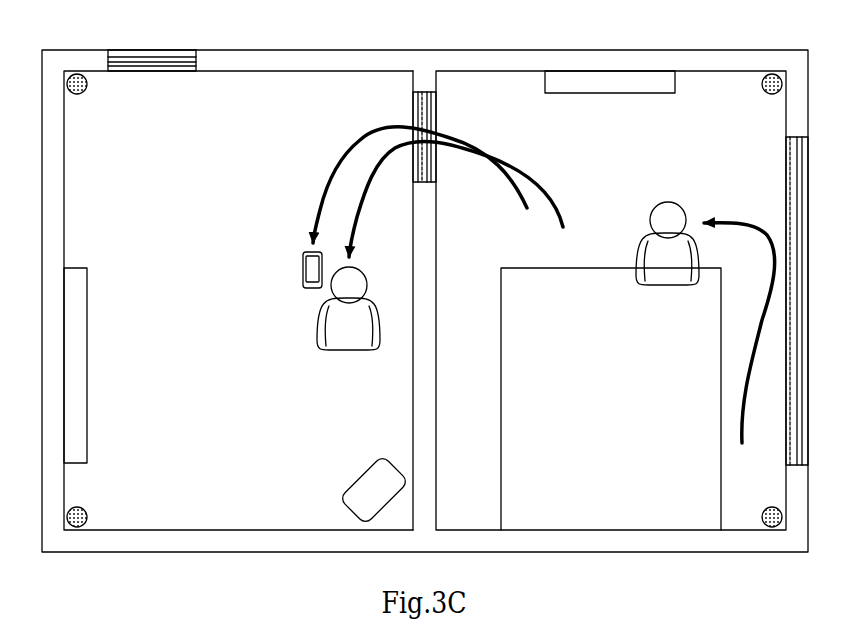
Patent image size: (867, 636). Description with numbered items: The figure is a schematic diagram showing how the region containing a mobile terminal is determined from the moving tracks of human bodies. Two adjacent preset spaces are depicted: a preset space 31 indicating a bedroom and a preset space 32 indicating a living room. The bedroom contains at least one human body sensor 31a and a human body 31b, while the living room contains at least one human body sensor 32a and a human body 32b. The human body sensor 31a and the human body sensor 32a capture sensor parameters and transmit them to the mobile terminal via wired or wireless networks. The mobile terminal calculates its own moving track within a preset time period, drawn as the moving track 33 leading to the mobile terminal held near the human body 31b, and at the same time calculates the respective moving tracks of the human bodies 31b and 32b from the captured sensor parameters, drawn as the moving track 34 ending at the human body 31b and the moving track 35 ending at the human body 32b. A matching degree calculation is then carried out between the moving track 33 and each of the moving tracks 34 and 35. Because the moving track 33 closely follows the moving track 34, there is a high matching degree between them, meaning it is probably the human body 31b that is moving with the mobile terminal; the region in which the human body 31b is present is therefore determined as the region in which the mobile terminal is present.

The preset space 31 is at (283, 70).
The preset space 32 is at (508, 70).
The human body sensor 31a is at (88, 90).
The human body sensor 32a is at (764, 92).
The human body 31b is at (340, 349).
The human body 32b is at (674, 200).
The moving track 33 is at (453, 136).
The moving track 34 is at (541, 177).
The moving track 35 is at (739, 224).